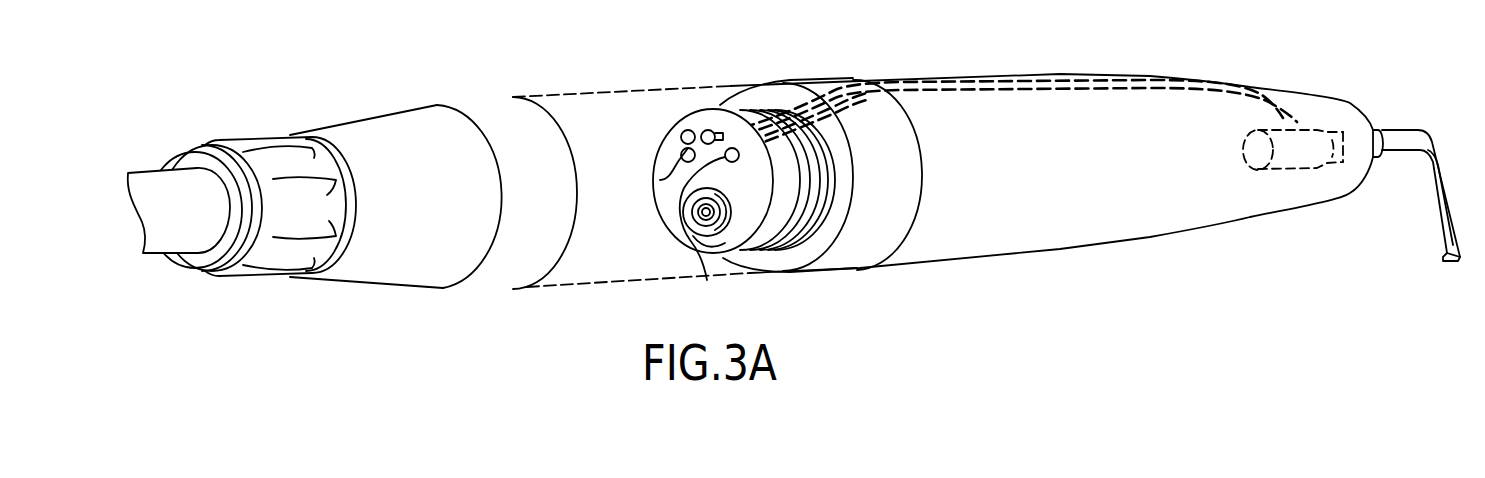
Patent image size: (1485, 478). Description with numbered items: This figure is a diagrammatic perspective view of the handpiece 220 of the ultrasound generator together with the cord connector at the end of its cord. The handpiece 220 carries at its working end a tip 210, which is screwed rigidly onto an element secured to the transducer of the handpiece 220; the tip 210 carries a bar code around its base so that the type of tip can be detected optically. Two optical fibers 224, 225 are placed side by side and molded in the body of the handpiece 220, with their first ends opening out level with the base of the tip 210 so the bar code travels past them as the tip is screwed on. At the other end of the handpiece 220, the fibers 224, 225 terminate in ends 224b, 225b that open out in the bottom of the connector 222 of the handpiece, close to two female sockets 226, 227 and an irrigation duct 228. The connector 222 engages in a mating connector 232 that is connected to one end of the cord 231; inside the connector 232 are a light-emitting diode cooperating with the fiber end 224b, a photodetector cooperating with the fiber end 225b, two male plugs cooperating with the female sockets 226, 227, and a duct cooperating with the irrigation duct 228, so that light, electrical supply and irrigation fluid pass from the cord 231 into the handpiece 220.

The tip 210 is at (1425, 138).
The handpiece 220 is at (1073, 232).
The connector 222 is at (763, 233).
The optical fiber 224 is at (952, 78).
The end of optical fiber 224b is at (680, 137).
The optical fiber 225 is at (1050, 74).
The end of optical fiber 225b is at (707, 130).
The female socket 226 is at (660, 180).
The female socket 227 is at (680, 220).
The irrigation duct 228 is at (699, 250).
The cord 231 is at (152, 246).
The connector 232 is at (399, 272).